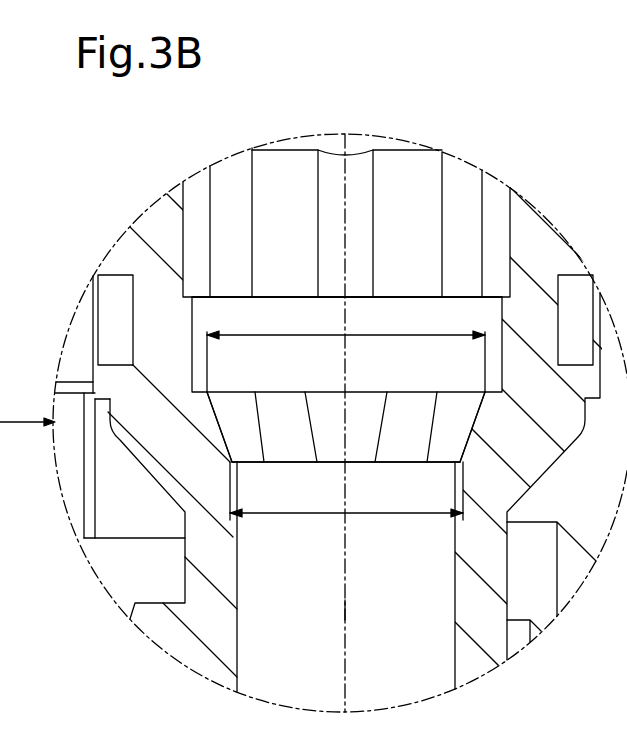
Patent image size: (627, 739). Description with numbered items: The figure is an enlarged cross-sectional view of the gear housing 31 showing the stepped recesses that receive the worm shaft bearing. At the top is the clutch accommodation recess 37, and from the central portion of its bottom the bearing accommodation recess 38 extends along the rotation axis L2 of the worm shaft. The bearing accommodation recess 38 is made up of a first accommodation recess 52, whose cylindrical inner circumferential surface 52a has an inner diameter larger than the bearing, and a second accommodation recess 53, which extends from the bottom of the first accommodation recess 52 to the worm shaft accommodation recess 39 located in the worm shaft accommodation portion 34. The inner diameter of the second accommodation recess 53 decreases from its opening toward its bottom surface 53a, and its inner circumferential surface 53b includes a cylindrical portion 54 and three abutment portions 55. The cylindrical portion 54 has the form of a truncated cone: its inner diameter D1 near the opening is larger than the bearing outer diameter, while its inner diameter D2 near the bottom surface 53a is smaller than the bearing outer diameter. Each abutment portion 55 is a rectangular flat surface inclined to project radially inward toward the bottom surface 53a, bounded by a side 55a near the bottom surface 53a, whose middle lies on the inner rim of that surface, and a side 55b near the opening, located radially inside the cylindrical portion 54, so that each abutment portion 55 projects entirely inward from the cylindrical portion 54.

The gear housing 31 is at (588, 417).
The worm shaft accommodation portion 34 is at (190, 577).
The clutch accommodation recess 37 is at (508, 222).
The bearing accommodation recess 38 is at (498, 362).
The worm shaft accommodation recess 39 is at (240, 626).
The first accommodation recess 52 is at (192, 311).
The inner circumferential surface 52a is at (410, 310).
The second accommodation recess 53 is at (220, 438).
The bottom surface 53a is at (466, 443).
The inner circumferential surface 53b is at (217, 407).
The cylindrical portion 54 is at (467, 413).
The abutment portion 55 is at (287, 400).
The side 55a is at (273, 465).
The side 55b is at (275, 393).
The inner diameter D1 is at (313, 335).
The inner diameter D2 is at (298, 517).
The rotation axis L2 is at (350, 607).